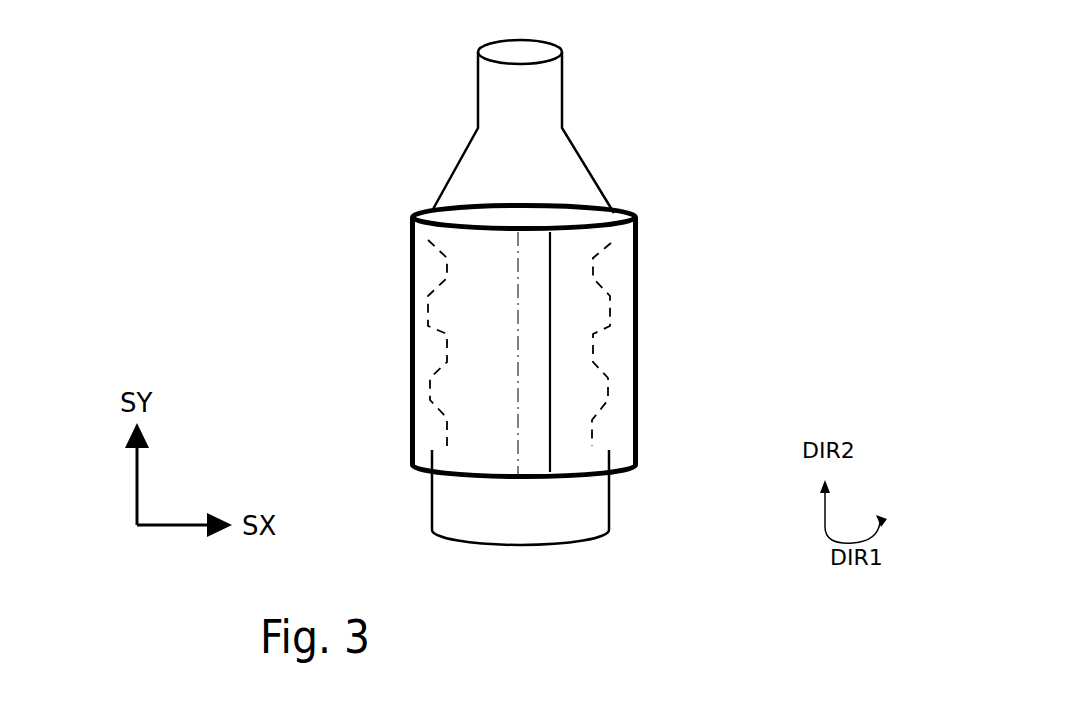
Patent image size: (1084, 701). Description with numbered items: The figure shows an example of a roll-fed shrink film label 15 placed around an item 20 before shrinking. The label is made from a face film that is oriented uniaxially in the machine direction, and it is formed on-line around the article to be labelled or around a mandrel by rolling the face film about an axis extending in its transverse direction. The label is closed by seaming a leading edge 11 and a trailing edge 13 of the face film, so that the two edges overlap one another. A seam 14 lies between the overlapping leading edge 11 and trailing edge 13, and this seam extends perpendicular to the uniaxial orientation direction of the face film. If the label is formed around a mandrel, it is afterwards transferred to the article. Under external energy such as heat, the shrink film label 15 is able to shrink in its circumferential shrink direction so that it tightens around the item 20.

The leading edge of a face film 11 is at (518, 442).
The trailing edge of a face film 13 is at (545, 363).
The seam 14 is at (532, 437).
The roll fed shrink film label 15 is at (640, 253).
The item 20 is at (572, 143).